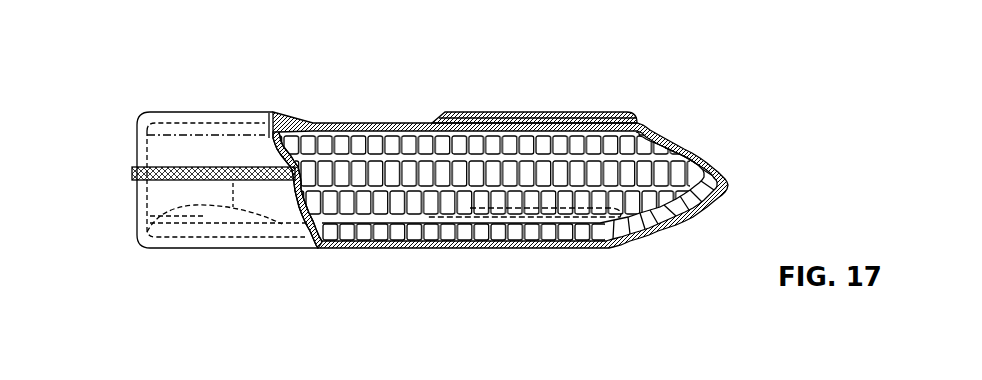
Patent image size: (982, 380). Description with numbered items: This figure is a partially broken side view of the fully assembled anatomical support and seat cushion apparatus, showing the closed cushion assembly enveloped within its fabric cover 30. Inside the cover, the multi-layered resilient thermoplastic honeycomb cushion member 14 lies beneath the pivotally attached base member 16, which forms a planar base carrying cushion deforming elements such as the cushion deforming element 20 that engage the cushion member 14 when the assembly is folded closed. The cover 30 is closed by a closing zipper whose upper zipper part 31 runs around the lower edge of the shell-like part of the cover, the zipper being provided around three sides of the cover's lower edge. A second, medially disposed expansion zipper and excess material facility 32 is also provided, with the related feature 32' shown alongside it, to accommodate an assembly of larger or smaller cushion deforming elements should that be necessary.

The cushion member 14 is at (376, 148).
The base member 16 is at (356, 238).
The cushion deforming element 20 is at (542, 220).
The cover 30 is at (288, 228).
The upper zipper part 31 is at (512, 112).
The expansion zipper and excess material facility 32 is at (500, 211).
The rod / connector 32' is at (167, 156).